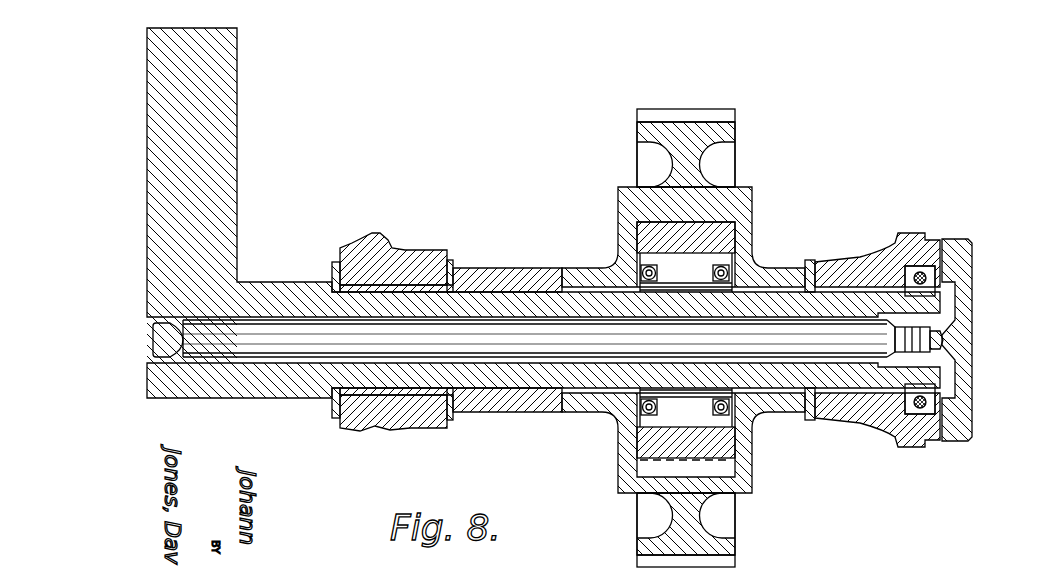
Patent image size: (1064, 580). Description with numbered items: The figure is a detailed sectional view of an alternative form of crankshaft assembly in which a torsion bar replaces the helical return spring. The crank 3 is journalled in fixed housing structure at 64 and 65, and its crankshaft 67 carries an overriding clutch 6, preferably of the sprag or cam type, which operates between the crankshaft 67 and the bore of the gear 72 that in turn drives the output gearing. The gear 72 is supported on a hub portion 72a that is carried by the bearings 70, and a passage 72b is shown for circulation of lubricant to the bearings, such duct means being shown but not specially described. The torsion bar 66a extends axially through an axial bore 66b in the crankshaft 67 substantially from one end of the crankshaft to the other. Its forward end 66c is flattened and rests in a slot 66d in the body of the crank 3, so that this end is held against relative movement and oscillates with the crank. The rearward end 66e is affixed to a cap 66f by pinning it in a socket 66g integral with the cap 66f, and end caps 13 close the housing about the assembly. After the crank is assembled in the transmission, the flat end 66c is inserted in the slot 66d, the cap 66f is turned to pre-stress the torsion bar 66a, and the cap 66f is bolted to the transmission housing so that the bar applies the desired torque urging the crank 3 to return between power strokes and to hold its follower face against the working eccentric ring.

The crank 3 is at (238, 196).
The overriding clutch 6 is at (683, 319).
The end cap 13 is at (390, 243).
The housing bearing 64 is at (429, 282).
The housing bearing 65 is at (848, 280).
The torsion bar 66a is at (261, 336).
The axial bore 66b is at (303, 318).
The forward end 66c is at (165, 348).
The slot 66d is at (183, 350).
The rearward end 66e is at (945, 312).
The cap 66f is at (968, 254).
The socket 66g is at (945, 336).
The crankshaft 67 is at (316, 392).
The ball bearing 70 is at (700, 281).
The gear 72 is at (696, 118).
The pulley hub 72a is at (647, 232).
The lubrication passage 72b is at (648, 459).